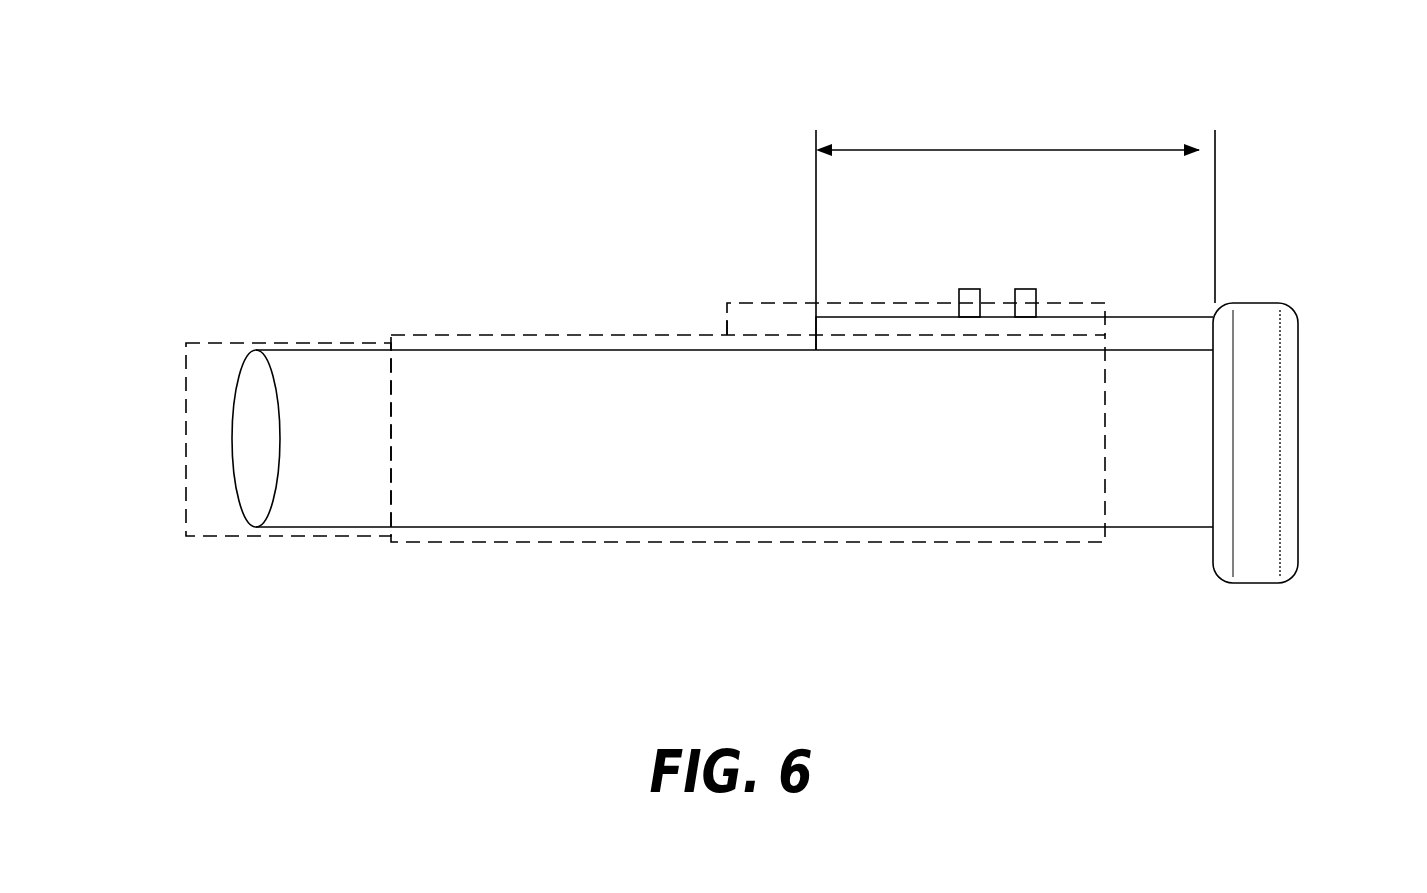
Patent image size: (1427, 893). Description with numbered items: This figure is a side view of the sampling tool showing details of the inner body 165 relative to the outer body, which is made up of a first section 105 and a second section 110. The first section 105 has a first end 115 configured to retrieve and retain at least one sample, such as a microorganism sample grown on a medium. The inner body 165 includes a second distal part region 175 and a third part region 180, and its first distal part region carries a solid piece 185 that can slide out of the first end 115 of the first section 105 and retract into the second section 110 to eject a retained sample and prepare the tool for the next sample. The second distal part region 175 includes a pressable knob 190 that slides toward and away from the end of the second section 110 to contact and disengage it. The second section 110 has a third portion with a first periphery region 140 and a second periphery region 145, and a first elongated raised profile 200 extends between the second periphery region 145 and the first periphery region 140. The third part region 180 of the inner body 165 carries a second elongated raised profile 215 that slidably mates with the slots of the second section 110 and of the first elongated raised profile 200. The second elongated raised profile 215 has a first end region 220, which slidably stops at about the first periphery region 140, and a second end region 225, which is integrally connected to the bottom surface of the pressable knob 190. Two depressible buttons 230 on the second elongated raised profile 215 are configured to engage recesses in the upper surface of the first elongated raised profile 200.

The first section 105 is at (219, 548).
The second section 110 is at (782, 556).
The first end 115 is at (178, 469).
The first periphery region 140 is at (717, 328).
The second periphery region 145 is at (1108, 325).
The inner body 165 is at (345, 503).
The second distal part region 175 is at (1203, 507).
The third part region 180 is at (985, 128).
The solid piece 185 is at (230, 392).
The pressable knob 190 is at (1322, 423).
The first elongated raised profile 200 is at (697, 288).
The second elongated raised profile 215 is at (1178, 305).
The first end region 220 is at (808, 320).
The second end region 225 is at (1201, 335).
The depressible button 230 is at (1020, 285).